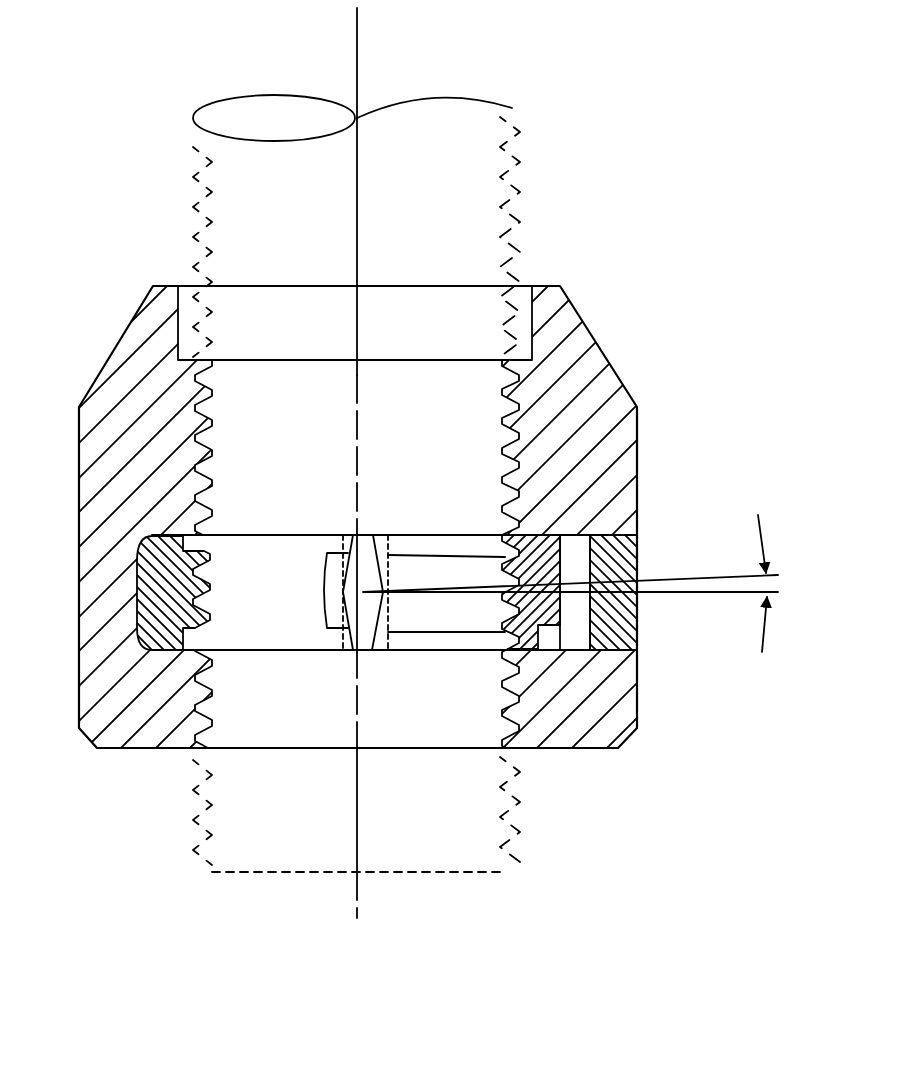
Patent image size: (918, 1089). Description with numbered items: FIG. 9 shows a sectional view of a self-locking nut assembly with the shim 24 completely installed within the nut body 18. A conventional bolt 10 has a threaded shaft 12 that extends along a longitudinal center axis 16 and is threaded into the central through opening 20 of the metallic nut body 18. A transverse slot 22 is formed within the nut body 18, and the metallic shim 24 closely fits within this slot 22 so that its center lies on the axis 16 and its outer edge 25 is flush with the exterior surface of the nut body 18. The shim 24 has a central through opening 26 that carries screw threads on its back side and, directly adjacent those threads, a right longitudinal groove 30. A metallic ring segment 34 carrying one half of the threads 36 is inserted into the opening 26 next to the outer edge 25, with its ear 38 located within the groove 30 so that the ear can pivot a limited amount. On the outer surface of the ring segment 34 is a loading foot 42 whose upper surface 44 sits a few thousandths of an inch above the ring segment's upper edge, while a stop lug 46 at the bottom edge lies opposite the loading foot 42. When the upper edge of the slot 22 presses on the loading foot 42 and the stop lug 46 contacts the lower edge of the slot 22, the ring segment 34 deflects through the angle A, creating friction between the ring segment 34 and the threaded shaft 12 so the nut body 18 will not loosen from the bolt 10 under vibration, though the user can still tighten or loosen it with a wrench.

The bolt 10 is at (95, 208).
The threaded shaft 12 is at (514, 166).
The longitudinal center axis 16 is at (358, 49).
The nut body 18 is at (622, 374).
The central through opening 20 is at (510, 407).
The transverse slot 22 is at (569, 536).
The shim 24 is at (270, 531).
The outer edge 25 is at (618, 612).
The central through opening 26 is at (207, 612).
The right longitudinal groove 30 is at (373, 535).
The ring segment 34 is at (446, 550).
The threads 36 is at (513, 610).
The ear 38 is at (368, 618).
The loading foot 42 is at (615, 622).
The upper surface 44 is at (532, 527).
The stop lug 46 is at (523, 653).